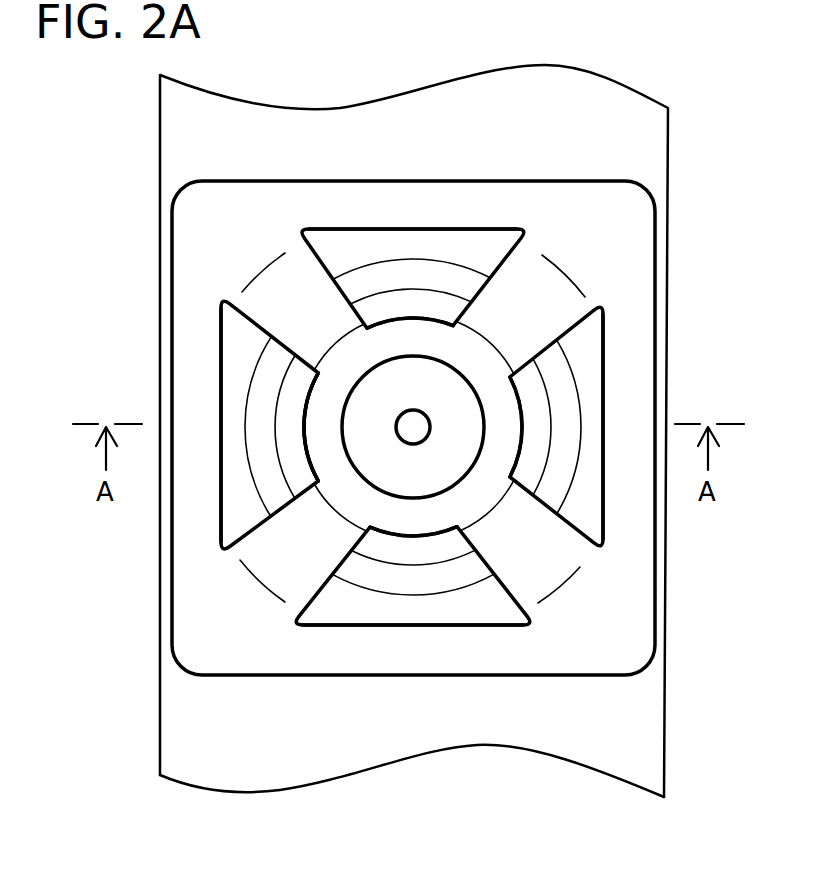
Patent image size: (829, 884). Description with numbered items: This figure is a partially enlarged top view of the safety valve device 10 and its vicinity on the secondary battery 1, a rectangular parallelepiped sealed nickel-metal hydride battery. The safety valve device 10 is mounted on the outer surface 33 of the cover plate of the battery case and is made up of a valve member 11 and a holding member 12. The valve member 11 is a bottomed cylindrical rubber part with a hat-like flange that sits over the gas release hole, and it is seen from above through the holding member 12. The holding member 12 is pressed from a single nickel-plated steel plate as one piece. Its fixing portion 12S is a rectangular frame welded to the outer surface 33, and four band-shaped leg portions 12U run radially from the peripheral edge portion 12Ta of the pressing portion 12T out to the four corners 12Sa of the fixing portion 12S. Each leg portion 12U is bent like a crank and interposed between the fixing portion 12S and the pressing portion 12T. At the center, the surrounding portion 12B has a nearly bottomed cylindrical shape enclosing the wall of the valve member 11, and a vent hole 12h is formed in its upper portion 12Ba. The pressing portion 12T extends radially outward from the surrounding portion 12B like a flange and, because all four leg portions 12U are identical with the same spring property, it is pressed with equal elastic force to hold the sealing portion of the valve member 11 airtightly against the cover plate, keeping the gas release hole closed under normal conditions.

The secondary battery 1 is at (327, 98).
The safety valve device 10 is at (722, 273).
The valve member 11 is at (533, 402).
The holding member 12 is at (610, 289).
The fixing portion 12S is at (603, 232).
The corners 12Sa is at (227, 232).
The leg portions 12U is at (530, 313).
The pressing portion 12T is at (480, 357).
The peripheral edge portion 12Ta is at (312, 452).
The surrounding portion 12B is at (483, 452).
The upper portion 12Ba is at (430, 472).
The vent hole 12h is at (413, 437).
The outer surface 33 is at (615, 708).